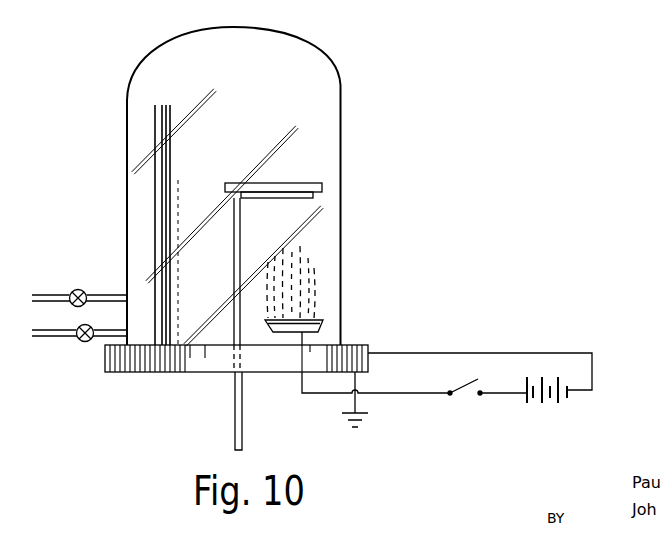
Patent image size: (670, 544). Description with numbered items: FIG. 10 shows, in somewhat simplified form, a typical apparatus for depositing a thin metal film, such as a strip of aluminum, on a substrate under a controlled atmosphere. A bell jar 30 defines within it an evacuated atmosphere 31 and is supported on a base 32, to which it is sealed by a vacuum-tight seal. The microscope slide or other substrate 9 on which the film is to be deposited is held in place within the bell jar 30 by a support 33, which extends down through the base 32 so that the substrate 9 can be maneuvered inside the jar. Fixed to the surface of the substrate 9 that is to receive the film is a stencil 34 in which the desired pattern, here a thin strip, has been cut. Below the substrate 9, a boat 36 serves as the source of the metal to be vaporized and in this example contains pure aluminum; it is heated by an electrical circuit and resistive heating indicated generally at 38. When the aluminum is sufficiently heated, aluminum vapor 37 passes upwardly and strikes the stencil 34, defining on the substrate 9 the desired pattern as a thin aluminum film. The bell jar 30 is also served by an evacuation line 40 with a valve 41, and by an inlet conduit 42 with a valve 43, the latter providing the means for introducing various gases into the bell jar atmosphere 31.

The bell jar 30 is at (341, 85).
The evacuated atmosphere 31 is at (238, 82).
The substrate 9 is at (303, 182).
The stencil 34 is at (315, 196).
The support 33 is at (233, 262).
The aluminum vapor 37 is at (310, 280).
The boat 36 is at (318, 322).
The base 32 is at (190, 363).
The electrical circuit and resistive heating 38 is at (508, 394).
The evacuation line 40 is at (63, 337).
The valve 41 is at (88, 342).
The inlet conduit 42 is at (52, 294).
The valve 43 is at (84, 291).